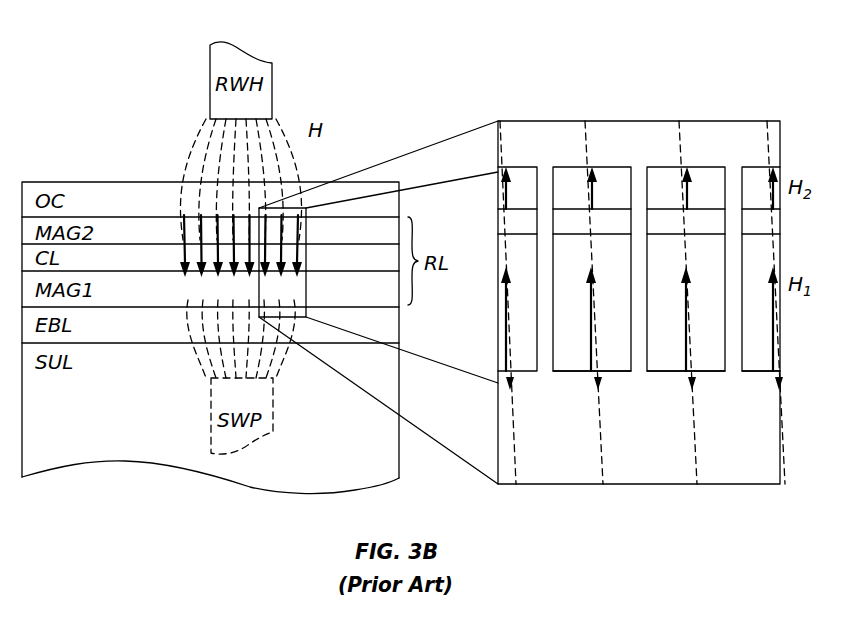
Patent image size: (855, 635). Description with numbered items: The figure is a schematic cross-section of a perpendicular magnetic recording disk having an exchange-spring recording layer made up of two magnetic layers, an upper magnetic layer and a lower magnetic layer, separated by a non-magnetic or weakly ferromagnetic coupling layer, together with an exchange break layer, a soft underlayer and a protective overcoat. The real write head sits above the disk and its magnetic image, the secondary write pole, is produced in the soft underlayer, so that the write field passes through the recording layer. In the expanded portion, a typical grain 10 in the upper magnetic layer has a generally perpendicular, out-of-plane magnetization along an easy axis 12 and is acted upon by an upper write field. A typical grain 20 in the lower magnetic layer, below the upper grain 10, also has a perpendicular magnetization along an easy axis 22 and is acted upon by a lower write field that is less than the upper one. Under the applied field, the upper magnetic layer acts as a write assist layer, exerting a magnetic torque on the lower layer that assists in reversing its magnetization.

The grain 10 is at (698, 172).
The easy axis 12 is at (684, 193).
The grain 20 is at (700, 362).
The easy axis 22 is at (685, 333).